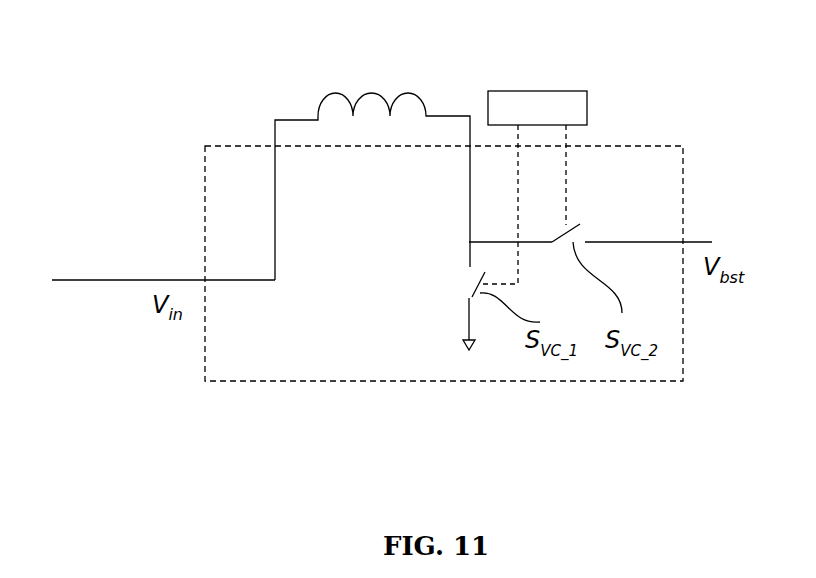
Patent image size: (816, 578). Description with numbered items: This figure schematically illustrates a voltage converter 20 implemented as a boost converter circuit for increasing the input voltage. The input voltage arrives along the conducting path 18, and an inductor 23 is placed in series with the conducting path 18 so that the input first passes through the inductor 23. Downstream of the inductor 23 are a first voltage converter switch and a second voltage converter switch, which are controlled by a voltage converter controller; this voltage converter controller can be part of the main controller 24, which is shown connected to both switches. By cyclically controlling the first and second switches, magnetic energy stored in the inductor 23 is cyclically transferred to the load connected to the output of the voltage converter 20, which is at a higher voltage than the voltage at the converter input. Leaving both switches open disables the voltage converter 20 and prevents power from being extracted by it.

The conducting path 18 is at (82, 280).
The voltage converter 20 is at (258, 383).
The inductor 23 is at (380, 85).
The main controller 24 is at (538, 88).